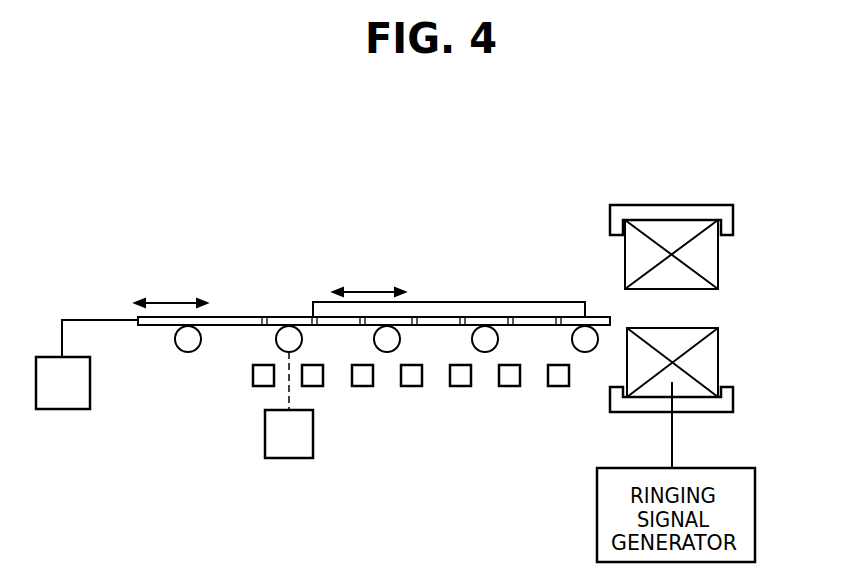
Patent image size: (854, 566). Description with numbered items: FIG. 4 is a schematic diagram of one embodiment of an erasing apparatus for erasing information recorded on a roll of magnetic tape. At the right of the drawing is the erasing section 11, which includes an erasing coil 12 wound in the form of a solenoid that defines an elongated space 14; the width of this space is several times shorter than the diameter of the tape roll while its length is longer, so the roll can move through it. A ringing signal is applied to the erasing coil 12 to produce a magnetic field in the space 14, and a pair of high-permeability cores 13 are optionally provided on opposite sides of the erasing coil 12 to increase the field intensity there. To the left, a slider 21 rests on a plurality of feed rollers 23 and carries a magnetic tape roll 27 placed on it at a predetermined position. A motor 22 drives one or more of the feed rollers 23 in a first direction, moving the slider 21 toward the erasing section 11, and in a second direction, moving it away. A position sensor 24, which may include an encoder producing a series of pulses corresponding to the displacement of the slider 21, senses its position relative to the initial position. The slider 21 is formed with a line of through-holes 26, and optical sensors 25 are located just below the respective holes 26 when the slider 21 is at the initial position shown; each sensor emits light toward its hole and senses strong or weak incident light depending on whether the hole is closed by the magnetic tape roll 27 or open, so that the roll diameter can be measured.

The erasing section 11 is at (702, 302).
The erasing coil 12 is at (748, 362).
The cores 13 is at (756, 397).
The space 14 is at (695, 312).
The slider 21 is at (222, 317).
The motor 22 is at (313, 437).
The feed rollers 23 is at (198, 351).
The position sensor 24 is at (62, 410).
The optical sensors 25 is at (510, 387).
The through-holes 26 is at (585, 400).
The magnetic tape roll 27 is at (443, 303).